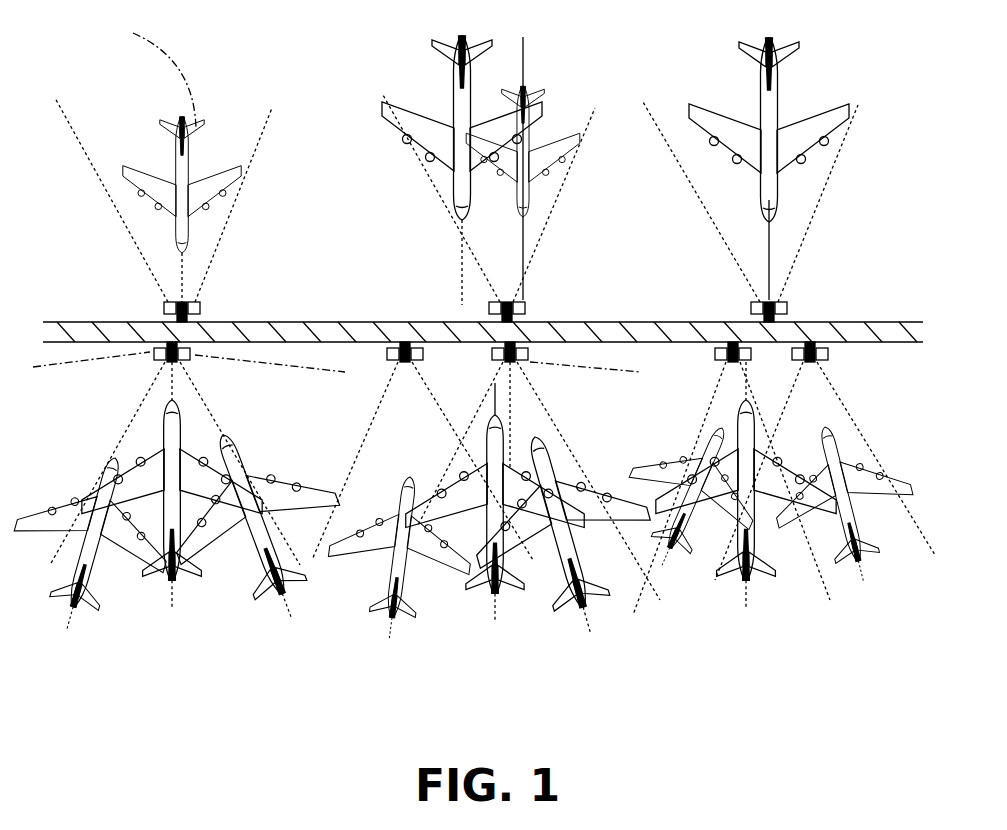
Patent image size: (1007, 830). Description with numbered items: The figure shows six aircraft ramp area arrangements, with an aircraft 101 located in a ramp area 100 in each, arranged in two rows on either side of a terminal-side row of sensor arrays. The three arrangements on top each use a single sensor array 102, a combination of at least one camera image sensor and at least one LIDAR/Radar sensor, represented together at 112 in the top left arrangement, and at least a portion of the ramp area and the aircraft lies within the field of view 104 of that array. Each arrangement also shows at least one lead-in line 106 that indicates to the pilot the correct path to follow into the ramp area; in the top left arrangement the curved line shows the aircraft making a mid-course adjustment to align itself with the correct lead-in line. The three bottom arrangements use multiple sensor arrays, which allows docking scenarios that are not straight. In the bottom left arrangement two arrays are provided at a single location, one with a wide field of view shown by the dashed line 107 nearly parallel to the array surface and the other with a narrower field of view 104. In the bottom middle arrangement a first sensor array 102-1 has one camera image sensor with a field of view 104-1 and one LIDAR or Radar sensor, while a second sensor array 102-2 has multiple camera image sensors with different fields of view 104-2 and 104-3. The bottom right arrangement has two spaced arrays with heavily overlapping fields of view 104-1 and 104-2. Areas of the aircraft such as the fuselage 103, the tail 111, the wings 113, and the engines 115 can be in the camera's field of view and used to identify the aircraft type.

The ramp area 100 is at (467, 394).
The aircraft 101 is at (228, 128).
The sensor array 102 is at (165, 310).
The first sensor array 102-1 is at (388, 351).
The second sensor array 102-2 is at (528, 353).
The fuselage 103 is at (806, 130).
The field of view 104 is at (93, 163).
The first field of view 104-1 is at (395, 393).
The second field of view 104-2 is at (487, 392).
The third field of view 104-3 is at (545, 400).
The lead-in line 106 is at (165, 63).
The wide field of view dashed line 107 is at (33, 367).
The tail 111 is at (775, 77).
The camera image sensor and LIDAR/Radar sensor 112 is at (165, 255).
The wings 113 is at (820, 122).
The engines 115 is at (805, 155).